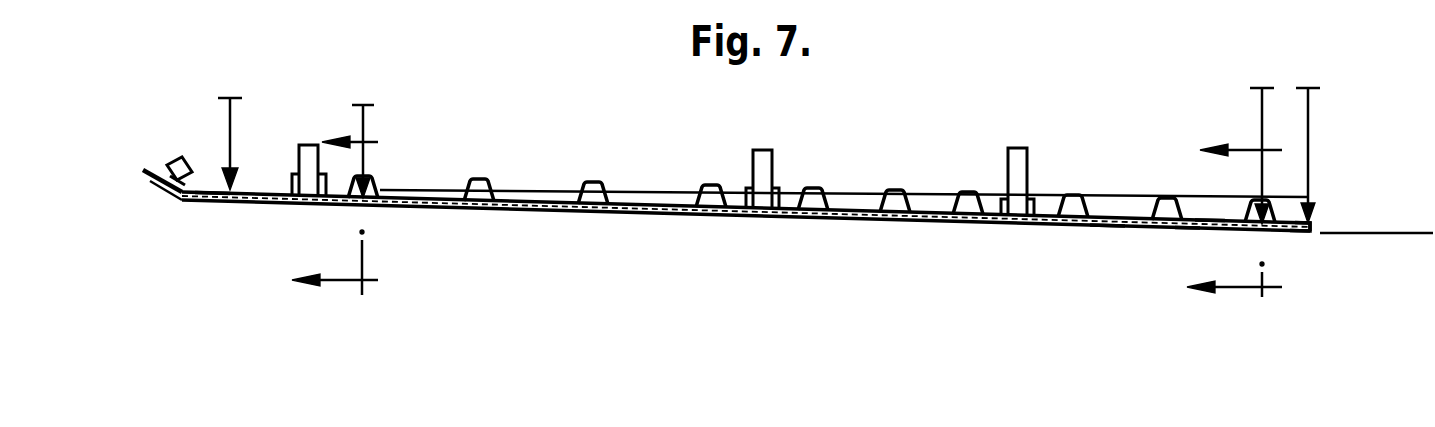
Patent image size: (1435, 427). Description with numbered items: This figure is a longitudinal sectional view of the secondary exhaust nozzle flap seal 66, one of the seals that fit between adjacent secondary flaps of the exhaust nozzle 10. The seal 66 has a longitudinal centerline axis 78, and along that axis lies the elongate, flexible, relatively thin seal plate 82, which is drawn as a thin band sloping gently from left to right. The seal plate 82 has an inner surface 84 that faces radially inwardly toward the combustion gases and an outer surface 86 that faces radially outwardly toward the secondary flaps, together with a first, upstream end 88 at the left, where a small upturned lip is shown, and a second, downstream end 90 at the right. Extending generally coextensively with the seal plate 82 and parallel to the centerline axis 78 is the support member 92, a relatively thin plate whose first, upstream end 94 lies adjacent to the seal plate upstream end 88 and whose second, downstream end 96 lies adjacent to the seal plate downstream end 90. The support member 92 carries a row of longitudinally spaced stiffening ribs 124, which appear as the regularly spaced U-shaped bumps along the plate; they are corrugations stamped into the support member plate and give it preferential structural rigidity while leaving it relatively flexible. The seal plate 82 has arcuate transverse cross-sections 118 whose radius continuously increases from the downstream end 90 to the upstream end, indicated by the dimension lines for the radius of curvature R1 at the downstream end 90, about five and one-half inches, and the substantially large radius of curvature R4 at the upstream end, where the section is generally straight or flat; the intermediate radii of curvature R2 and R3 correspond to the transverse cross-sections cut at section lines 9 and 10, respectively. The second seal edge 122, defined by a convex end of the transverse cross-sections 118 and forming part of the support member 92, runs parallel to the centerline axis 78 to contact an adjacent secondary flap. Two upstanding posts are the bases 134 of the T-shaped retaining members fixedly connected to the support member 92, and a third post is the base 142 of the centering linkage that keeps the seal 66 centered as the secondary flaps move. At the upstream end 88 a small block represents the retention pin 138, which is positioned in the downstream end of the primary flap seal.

The secondary exhaust nozzle flap seal 66 is at (1106, 197).
The longitudinal centerline axis 78 is at (1370, 233).
The seal plate 82 is at (1107, 232).
The inner surface 84 is at (1188, 230).
The outer surface 86 is at (1207, 222).
The upstream end 88 is at (156, 170).
The downstream end 90 is at (1316, 238).
The support member 92 is at (1074, 197).
The upstream end 94 is at (212, 190).
The downstream end 96 is at (1297, 237).
The arcuate transverse cross-sections 118 is at (370, 203).
The second seal edge 122 is at (920, 194).
The stiffening ribs 124 is at (1160, 199).
The base 134 is at (300, 145).
The retention pin 138 is at (180, 152).
The base 142 is at (752, 165).
The exhaust nozzle 10 is at (355, 213).
The section line 9 is at (1245, 219).
The radius of curvature R1 is at (1308, 130).
The radius of curvature R2 is at (1262, 106).
The radius of curvature R3 is at (365, 123).
The radius of curvature R4 is at (232, 122).